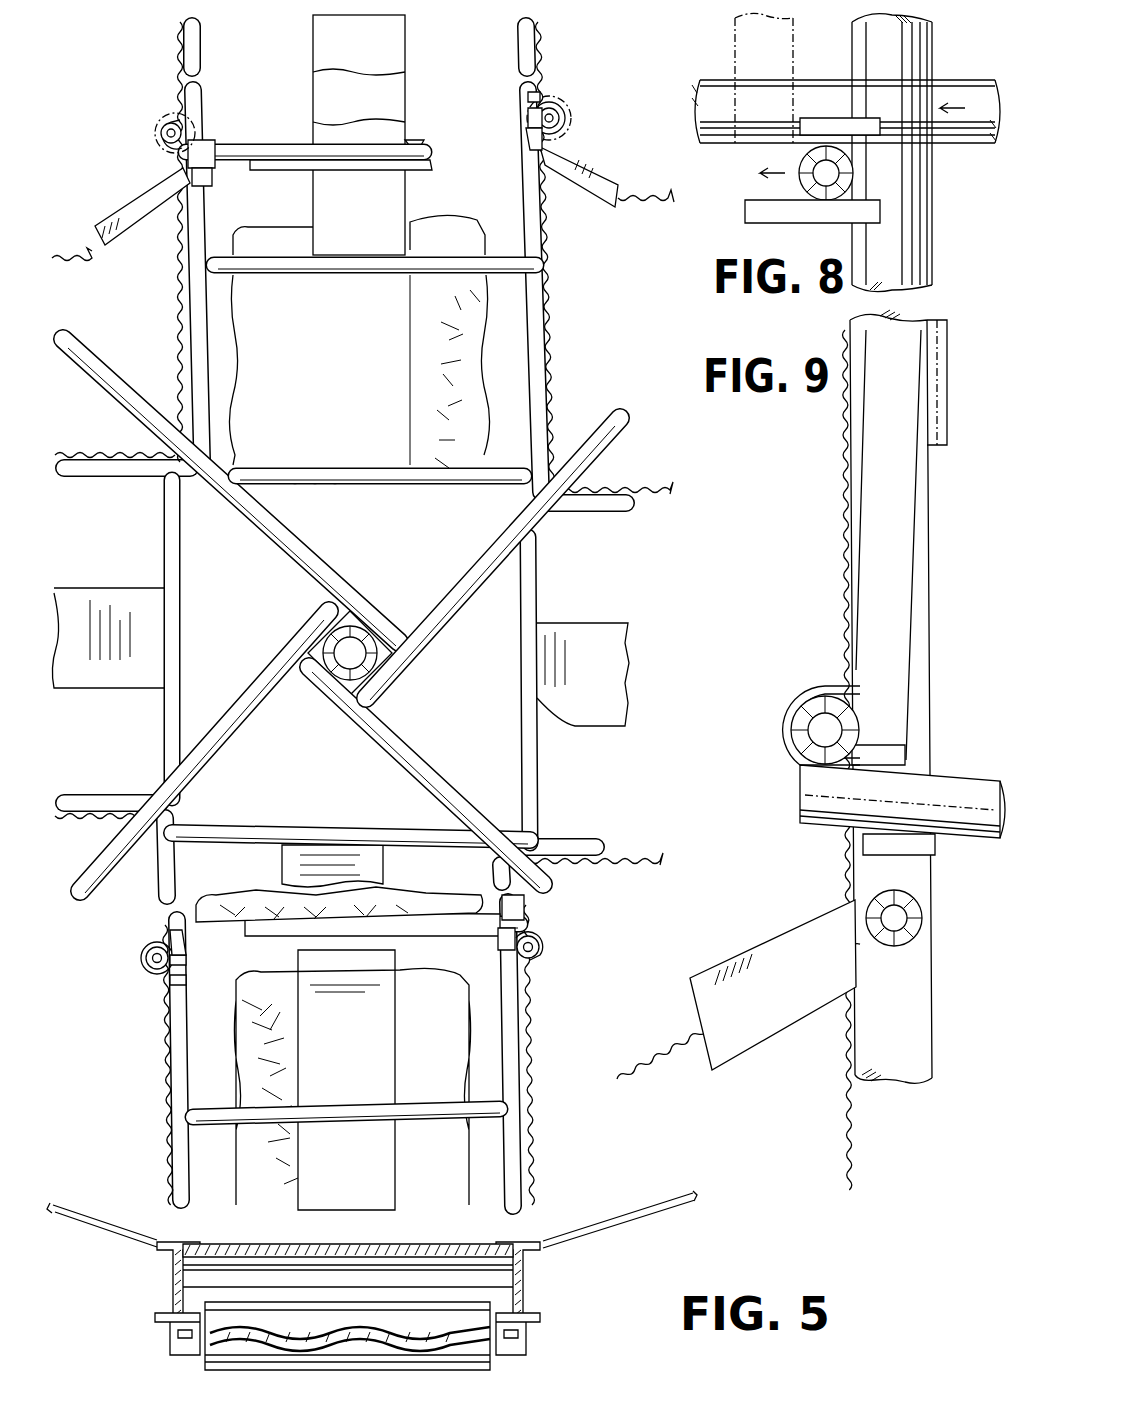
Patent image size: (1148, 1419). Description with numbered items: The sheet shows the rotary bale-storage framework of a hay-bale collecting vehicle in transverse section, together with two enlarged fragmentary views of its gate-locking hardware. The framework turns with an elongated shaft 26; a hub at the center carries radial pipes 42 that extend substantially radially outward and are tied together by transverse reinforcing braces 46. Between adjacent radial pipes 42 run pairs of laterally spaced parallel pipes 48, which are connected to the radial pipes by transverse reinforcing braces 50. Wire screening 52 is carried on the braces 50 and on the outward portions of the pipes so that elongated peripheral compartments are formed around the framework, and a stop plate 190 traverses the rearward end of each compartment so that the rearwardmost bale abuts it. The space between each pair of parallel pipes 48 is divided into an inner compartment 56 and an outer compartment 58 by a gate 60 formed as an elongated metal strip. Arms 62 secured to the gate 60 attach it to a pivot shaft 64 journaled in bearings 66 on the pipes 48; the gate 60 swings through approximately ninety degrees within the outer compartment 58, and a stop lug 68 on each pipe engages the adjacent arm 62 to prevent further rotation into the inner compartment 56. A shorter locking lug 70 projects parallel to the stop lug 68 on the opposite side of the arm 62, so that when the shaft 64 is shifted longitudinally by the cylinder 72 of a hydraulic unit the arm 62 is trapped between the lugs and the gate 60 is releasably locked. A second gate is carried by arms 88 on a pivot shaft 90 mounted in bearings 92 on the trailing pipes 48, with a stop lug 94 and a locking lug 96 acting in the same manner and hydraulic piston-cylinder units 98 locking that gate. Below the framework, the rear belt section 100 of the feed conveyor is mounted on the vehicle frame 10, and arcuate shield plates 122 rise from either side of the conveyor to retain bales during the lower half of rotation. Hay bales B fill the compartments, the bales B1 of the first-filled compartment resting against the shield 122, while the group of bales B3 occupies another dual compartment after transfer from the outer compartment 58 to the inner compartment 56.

In FIG. 5, the vehicle frame 10 is at (173, 1292).
In FIG. 5, the elongated shaft 26 is at (378, 670).
In FIG. 5, the radial pipes 42 is at (376, 622).
In FIG. 5, the transverse reinforcing braces 46 is at (180, 532).
In FIG. 5, the parallel pipes 48 is at (200, 65).
In FIG. 8, the parallel pipes 48 is at (922, 218).
In FIG. 9, the parallel pipes 48 is at (929, 665).
In FIG. 5, the transverse reinforcing braces 50 is at (125, 215).
In FIG. 9, the transverse reinforcing braces 50 is at (712, 990).
In FIG. 5, the wire screening 52 is at (92, 245).
In FIG. 9, the wire screening 52 is at (843, 515).
In FIG. 5, the inner compartment 56 is at (515, 359).
In FIG. 5, the outer compartment 58 is at (494, 1156).
In FIG. 5, the gate 60 is at (302, 166).
In FIG. 9, the gate 60 is at (950, 447).
In FIG. 5, the arms 62 is at (262, 142).
In FIG. 8, the arms 62 is at (735, 30).
In FIG. 9, the arms 62 is at (950, 790).
In FIG. 5, the pivot shaft 64 is at (161, 133).
In FIG. 8, the pivot shaft 64 is at (812, 92).
In FIG. 9, the pivot shaft 64 is at (792, 722).
In FIG. 5, the bearings 66 is at (166, 148).
In FIG. 9, the bearings 66 is at (815, 705).
In FIG. 5, the stop lug 68 is at (205, 172).
In FIG. 8, the stop lug 68 is at (802, 215).
In FIG. 9, the stop lug 68 is at (930, 848).
In FIG. 5, the locking lug 70 is at (203, 140).
In FIG. 8, the locking lug 70 is at (810, 136).
In FIG. 9, the locking lug 70 is at (905, 755).
In FIG. 5, the cylinder 72 is at (165, 118).
In FIG. 5, the arms 88 is at (528, 142).
In FIG. 5, the pivot shaft 90 is at (560, 116).
In FIG. 5, the bearings 92 is at (562, 128).
In FIG. 5, the stop lug 94 is at (528, 97).
In FIG. 5, the locking lug 96 is at (528, 118).
In FIG. 5, the hydraulic piston-cylinder unit 98 is at (562, 98).
In FIG. 5, the rear belt section 100 is at (462, 1300).
In FIG. 5, the arcuate shield plates 122 is at (90, 1222).
In FIG. 5, the stop plate 190 is at (400, 58).
In FIG. 5, the hay bales B is at (440, 992).
In FIG. 5, the bales B1 is at (420, 905).
In FIG. 5, the bales B3 is at (455, 230).